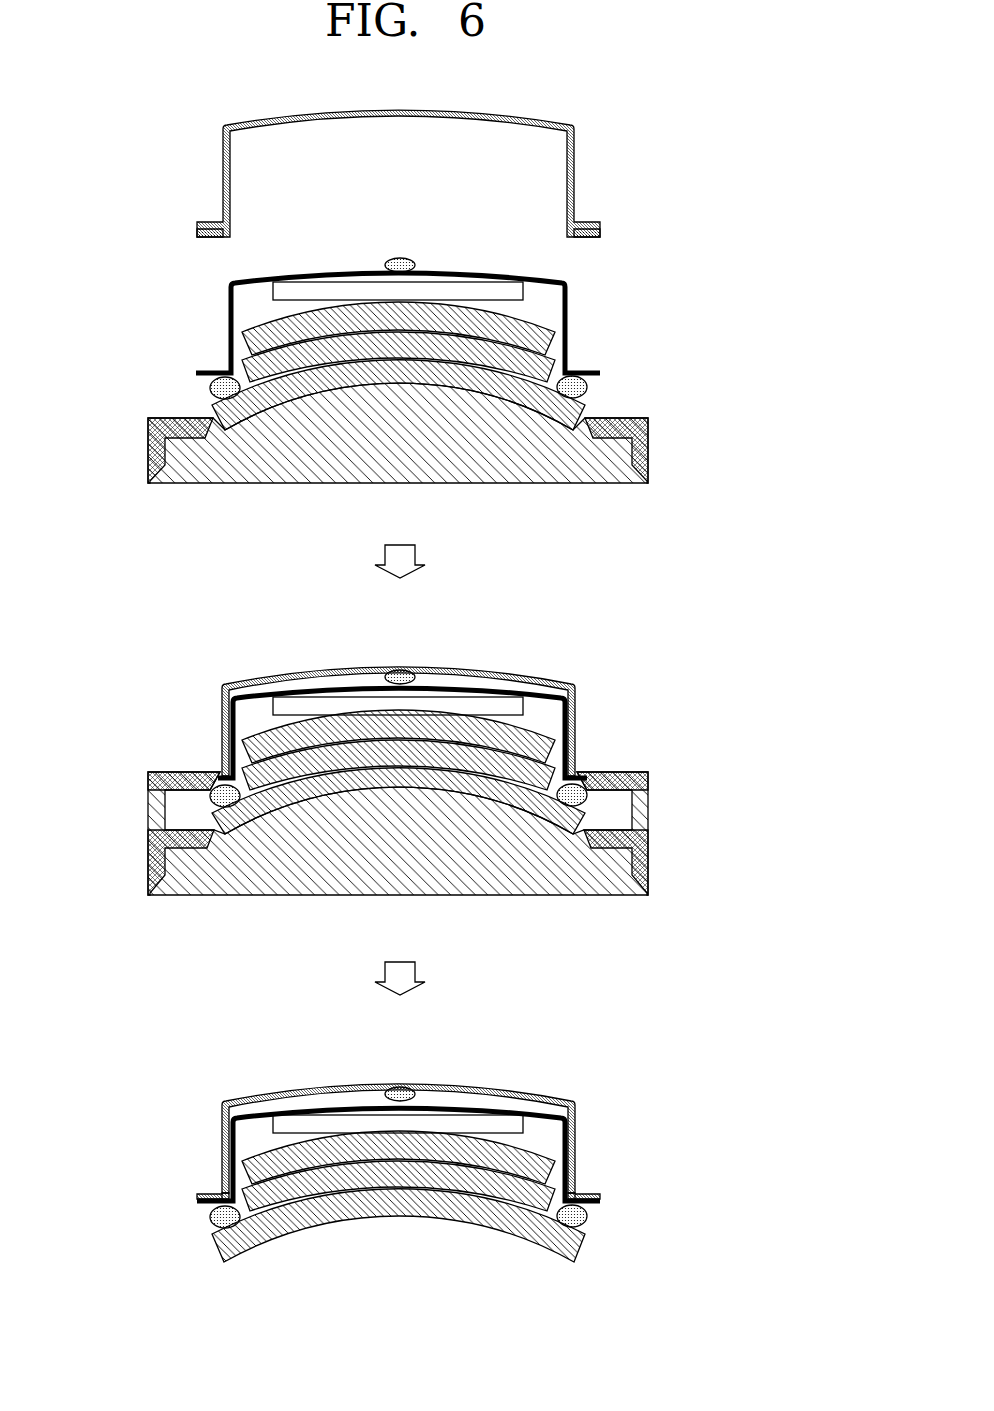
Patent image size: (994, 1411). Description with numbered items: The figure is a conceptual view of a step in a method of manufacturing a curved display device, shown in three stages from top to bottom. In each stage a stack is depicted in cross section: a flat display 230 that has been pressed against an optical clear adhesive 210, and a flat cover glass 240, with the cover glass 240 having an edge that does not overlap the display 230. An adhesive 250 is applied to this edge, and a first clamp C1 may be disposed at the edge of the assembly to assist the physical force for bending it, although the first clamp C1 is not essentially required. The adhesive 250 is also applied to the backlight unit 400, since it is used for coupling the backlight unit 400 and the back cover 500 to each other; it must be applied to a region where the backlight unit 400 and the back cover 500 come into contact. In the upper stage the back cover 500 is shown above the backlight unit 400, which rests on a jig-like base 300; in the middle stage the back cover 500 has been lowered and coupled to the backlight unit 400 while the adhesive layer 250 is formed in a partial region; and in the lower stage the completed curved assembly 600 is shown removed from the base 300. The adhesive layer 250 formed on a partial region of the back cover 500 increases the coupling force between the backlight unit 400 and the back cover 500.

The optical clear adhesive 210 is at (548, 360).
The flat display 230 is at (528, 332).
The flat cover glass 240 is at (583, 406).
The adhesive 250 is at (403, 258).
The jig base 300 is at (558, 483).
The backlight unit 400 is at (220, 305).
The back cover 500 is at (216, 142).
The camera module assembly 600 is at (600, 1079).
The first clamp C1 is at (649, 450).